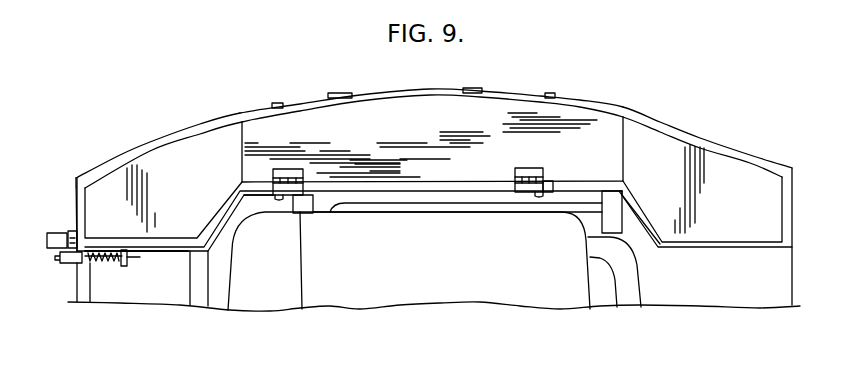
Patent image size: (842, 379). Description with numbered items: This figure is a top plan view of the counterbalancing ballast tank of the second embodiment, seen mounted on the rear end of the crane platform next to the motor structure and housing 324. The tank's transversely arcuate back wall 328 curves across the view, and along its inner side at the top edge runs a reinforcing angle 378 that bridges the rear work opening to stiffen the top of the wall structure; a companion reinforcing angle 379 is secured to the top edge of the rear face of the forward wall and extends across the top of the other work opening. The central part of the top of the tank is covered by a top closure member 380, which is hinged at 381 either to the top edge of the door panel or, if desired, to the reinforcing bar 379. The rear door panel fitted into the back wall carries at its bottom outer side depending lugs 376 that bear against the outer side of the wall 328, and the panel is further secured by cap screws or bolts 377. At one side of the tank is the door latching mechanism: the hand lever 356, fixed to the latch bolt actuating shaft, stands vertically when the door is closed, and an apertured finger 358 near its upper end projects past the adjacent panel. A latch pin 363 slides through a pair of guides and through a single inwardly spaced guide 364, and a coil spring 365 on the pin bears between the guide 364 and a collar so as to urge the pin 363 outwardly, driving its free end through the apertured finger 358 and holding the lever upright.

The motor structure and housing 324 is at (275, 308).
The transversely arcuate back wall 328 is at (182, 132).
The hand lever 356 is at (47, 232).
The apertured finger 358 is at (70, 240).
The latch pin 363 is at (133, 258).
The single guide 364 is at (128, 252).
The coil spring 365 is at (108, 263).
The depending lugs 376 is at (337, 92).
The cap screws or bolts 377 is at (552, 94).
The reinforcing angle 378 is at (710, 148).
The reinforcing angle 379 is at (640, 188).
The top closure member 380 is at (593, 117).
The hinge 381 is at (542, 173).